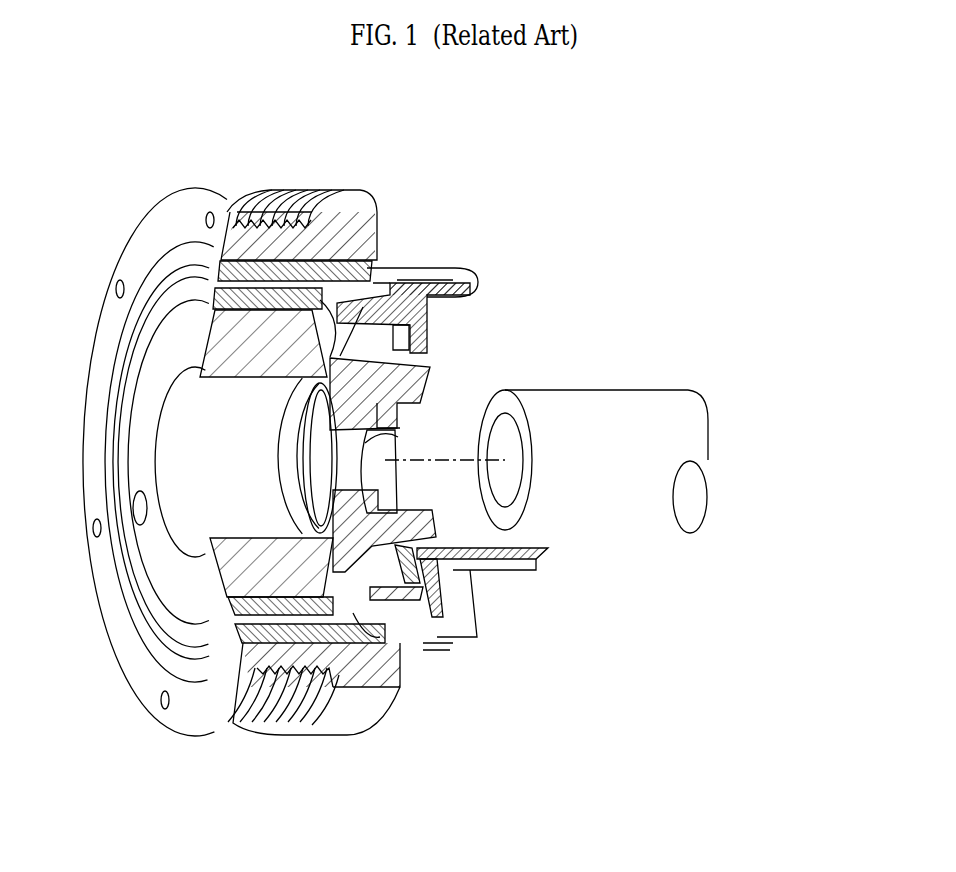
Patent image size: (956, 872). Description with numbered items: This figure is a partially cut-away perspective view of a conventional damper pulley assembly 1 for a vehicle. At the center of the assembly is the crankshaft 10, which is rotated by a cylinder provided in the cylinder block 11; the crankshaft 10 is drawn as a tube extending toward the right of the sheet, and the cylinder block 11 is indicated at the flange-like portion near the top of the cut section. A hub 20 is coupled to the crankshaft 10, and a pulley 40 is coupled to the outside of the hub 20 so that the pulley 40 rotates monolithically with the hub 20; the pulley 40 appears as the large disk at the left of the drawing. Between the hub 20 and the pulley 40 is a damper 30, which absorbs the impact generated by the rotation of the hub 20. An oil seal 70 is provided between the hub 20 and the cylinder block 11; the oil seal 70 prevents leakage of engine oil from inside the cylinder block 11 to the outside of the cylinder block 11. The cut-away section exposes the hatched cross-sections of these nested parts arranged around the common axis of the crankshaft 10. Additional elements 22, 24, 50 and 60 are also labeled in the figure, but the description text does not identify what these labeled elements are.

The damper pulley assembly 1 is at (454, 137).
The crankshaft 10 is at (601, 392).
The cylinder block 11 is at (462, 270).
The hub 20 is at (365, 764).
The cap 22 is at (470, 567).
The nut 24 is at (345, 650).
The damper 30 is at (167, 663).
The pulley 40 is at (186, 725).
The elastic ring 50 is at (230, 613).
The bushing 60 is at (227, 560).
The oil seal 70 is at (430, 552).